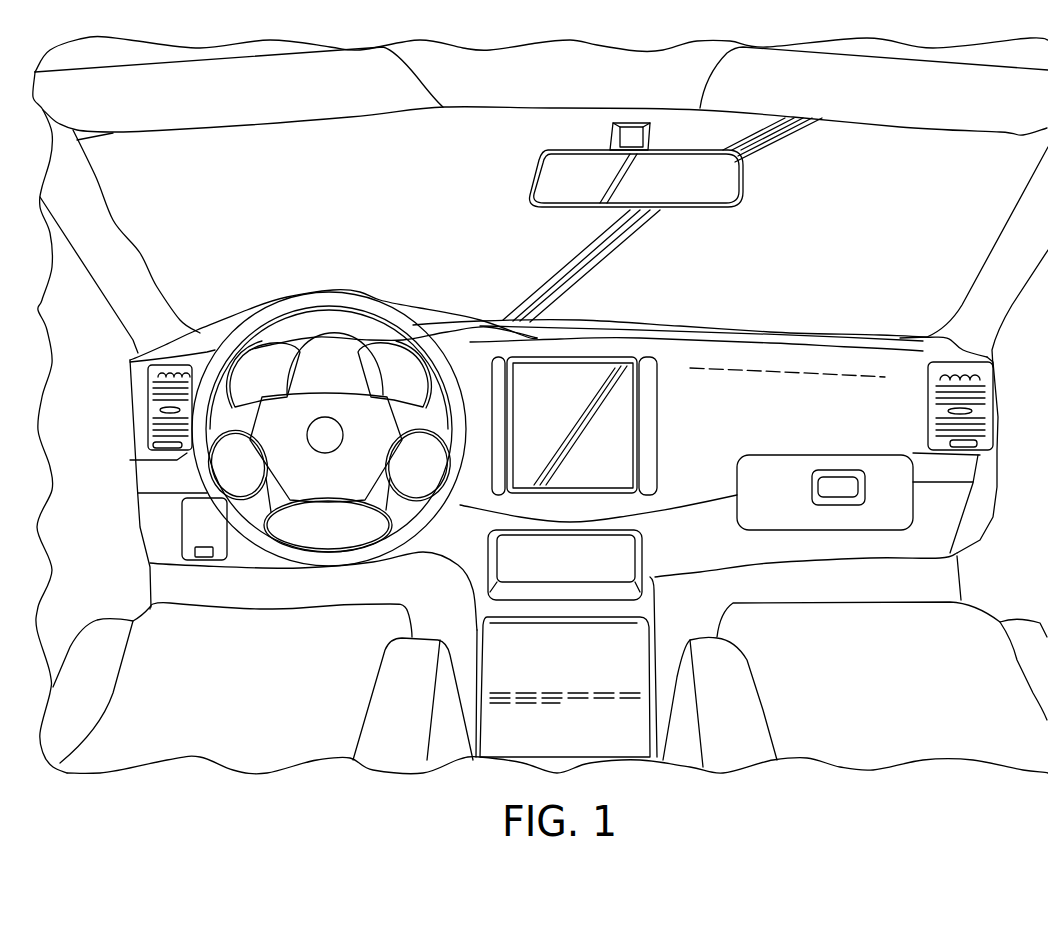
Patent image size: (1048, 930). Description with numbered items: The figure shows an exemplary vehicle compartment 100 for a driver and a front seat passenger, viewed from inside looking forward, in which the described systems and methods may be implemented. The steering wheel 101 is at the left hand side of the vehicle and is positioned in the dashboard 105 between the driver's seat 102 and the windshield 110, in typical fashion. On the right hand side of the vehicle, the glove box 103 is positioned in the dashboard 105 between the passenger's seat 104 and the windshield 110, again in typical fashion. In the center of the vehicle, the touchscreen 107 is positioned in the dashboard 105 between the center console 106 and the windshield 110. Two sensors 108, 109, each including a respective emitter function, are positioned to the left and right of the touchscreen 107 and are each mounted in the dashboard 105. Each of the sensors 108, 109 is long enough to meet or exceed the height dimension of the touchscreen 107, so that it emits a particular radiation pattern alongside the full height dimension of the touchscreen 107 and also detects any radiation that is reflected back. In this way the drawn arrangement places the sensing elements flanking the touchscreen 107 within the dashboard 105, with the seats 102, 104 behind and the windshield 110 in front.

The vehicle compartment 100 is at (613, 84).
The steering wheel 101 is at (333, 297).
The driver's seat 102 is at (353, 603).
The glove box 103 is at (797, 463).
The passenger's seat 104 is at (857, 605).
The dashboard 105 is at (140, 387).
The center console 106 is at (623, 660).
The touchscreen 107 is at (573, 378).
The sensor 108 is at (497, 365).
The sensor 109 is at (648, 394).
The windshield 110 is at (807, 308).